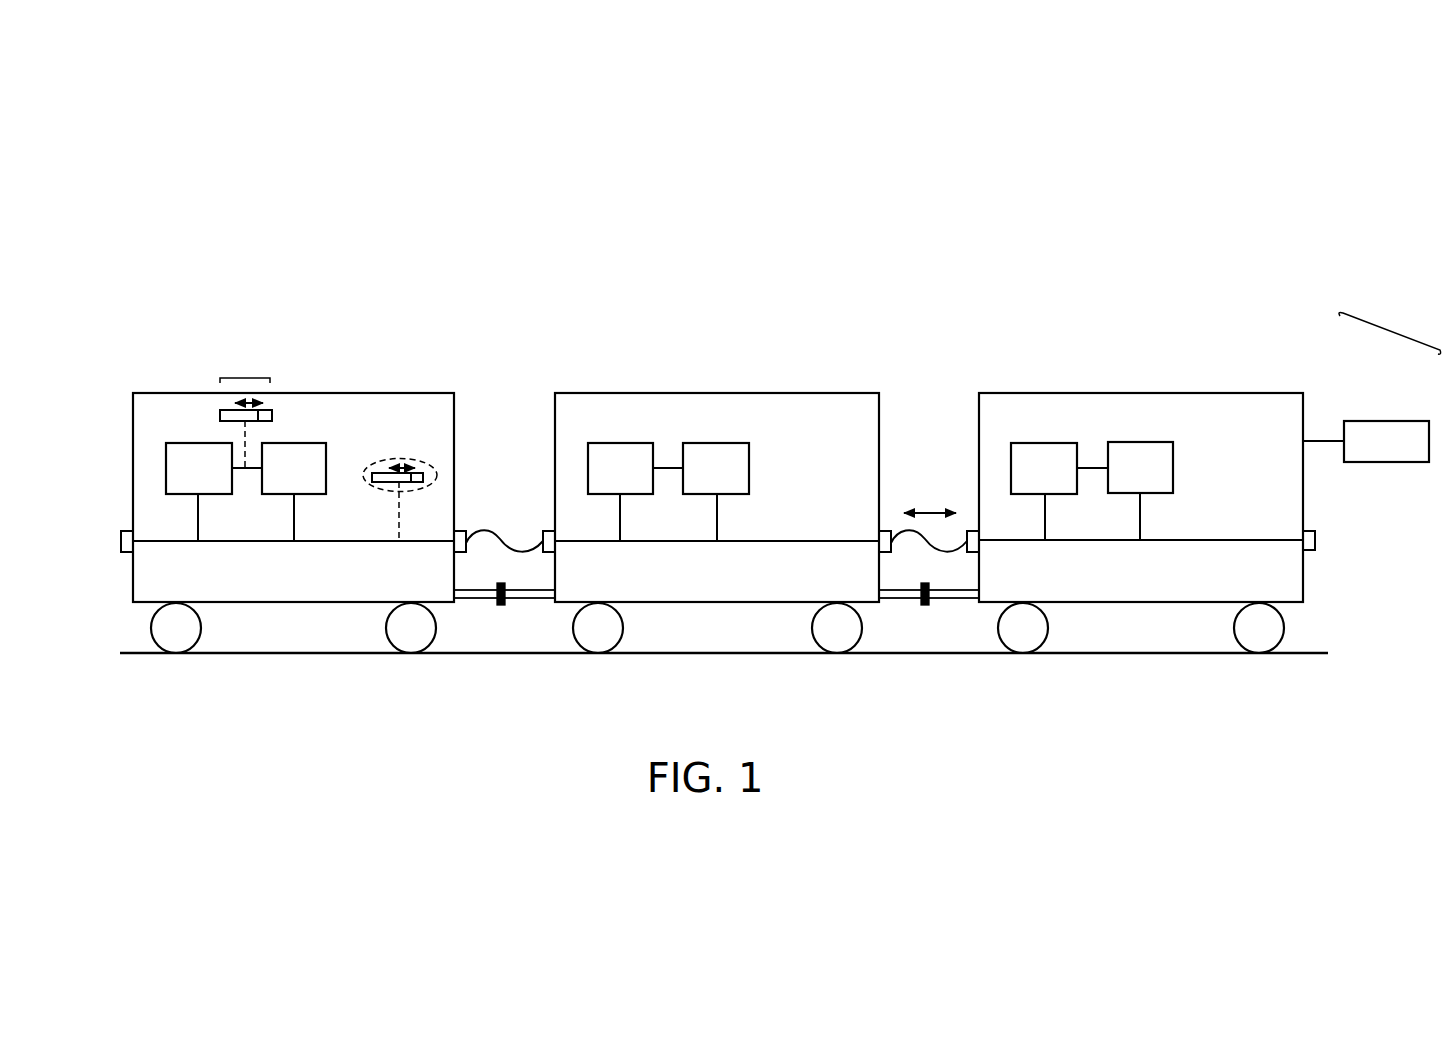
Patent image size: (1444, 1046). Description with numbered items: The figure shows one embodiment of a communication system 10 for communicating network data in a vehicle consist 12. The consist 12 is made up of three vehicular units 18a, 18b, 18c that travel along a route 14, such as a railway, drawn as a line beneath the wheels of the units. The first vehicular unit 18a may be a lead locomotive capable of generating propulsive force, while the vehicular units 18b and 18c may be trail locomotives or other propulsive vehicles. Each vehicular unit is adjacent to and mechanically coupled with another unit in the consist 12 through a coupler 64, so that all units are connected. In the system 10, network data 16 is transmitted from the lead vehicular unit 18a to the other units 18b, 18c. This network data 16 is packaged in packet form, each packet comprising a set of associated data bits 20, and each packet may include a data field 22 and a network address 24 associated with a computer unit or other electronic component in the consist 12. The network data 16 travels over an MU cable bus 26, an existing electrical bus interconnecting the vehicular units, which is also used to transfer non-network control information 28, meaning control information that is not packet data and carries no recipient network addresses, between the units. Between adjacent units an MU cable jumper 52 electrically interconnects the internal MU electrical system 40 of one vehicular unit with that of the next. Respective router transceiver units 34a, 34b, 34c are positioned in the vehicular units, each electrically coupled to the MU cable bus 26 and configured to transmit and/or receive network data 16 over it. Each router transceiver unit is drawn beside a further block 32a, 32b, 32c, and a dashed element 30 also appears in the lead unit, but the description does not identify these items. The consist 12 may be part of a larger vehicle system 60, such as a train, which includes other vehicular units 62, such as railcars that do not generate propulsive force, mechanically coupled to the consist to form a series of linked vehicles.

The communication system 10 is at (1282, 160).
The vehicle consist 12 is at (1248, 363).
The route 14 is at (228, 655).
The network data 16 is at (273, 402).
The vehicular unit 18a is at (430, 393).
The vehicular unit 18b is at (696, 393).
The vehicular unit 18c is at (1120, 392).
The set of associated data bits 20 is at (245, 378).
The data field 22 is at (220, 413).
The network address 24 is at (272, 416).
The MU cable bus 26 is at (498, 522).
The non-network control information 28 is at (932, 510).
The alternate communication device 30 is at (401, 458).
The controller of first vehicle 32a is at (220, 500).
The controller of second vehicle 32b is at (616, 443).
The controller of third vehicle 32c is at (1038, 443).
The router transceiver unit 34a is at (316, 500).
The router transceiver unit 34b is at (722, 443).
The router transceiver unit 34c is at (1148, 443).
The internal MU electrical system 40 is at (343, 548).
The MU cable jumper 52 is at (529, 559).
The vehicle system 60 is at (1372, 382).
The other vehicular units 62 is at (1387, 421).
The coupler 64 is at (518, 597).